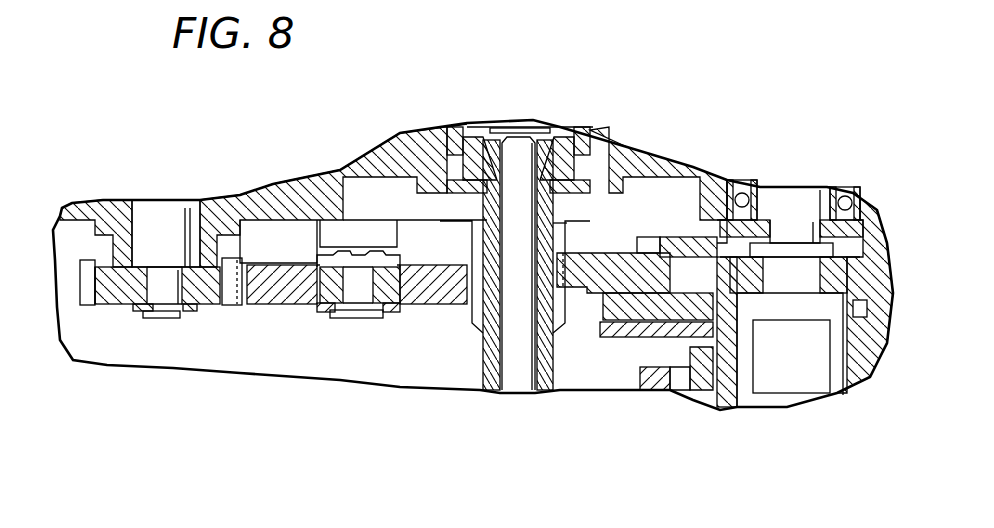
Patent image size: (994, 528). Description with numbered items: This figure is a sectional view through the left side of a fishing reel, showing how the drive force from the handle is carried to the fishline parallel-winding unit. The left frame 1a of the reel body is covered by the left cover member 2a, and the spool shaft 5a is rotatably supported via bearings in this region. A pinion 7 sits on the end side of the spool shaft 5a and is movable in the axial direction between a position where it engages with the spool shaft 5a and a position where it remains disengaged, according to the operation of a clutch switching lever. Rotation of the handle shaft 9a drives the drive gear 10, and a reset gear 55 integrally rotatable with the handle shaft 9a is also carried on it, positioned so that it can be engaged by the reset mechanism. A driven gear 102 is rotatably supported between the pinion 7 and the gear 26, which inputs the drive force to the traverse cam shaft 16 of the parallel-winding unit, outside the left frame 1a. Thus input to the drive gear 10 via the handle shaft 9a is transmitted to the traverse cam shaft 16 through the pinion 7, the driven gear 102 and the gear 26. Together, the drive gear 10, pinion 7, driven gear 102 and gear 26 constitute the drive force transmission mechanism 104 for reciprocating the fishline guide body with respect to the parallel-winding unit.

The left frame 1a is at (257, 192).
The traverse cam shaft 16 is at (167, 210).
The pinion 7 is at (473, 247).
The spool shaft 5a is at (520, 153).
The drive gear 10 is at (617, 257).
The reset gear 55 is at (677, 243).
The handle shaft 9a is at (750, 373).
The left cover member 2a is at (653, 383).
The gear 26 is at (112, 300).
The driven gear 102 is at (280, 304).
The drive force transmission mechanism 104 is at (378, 330).